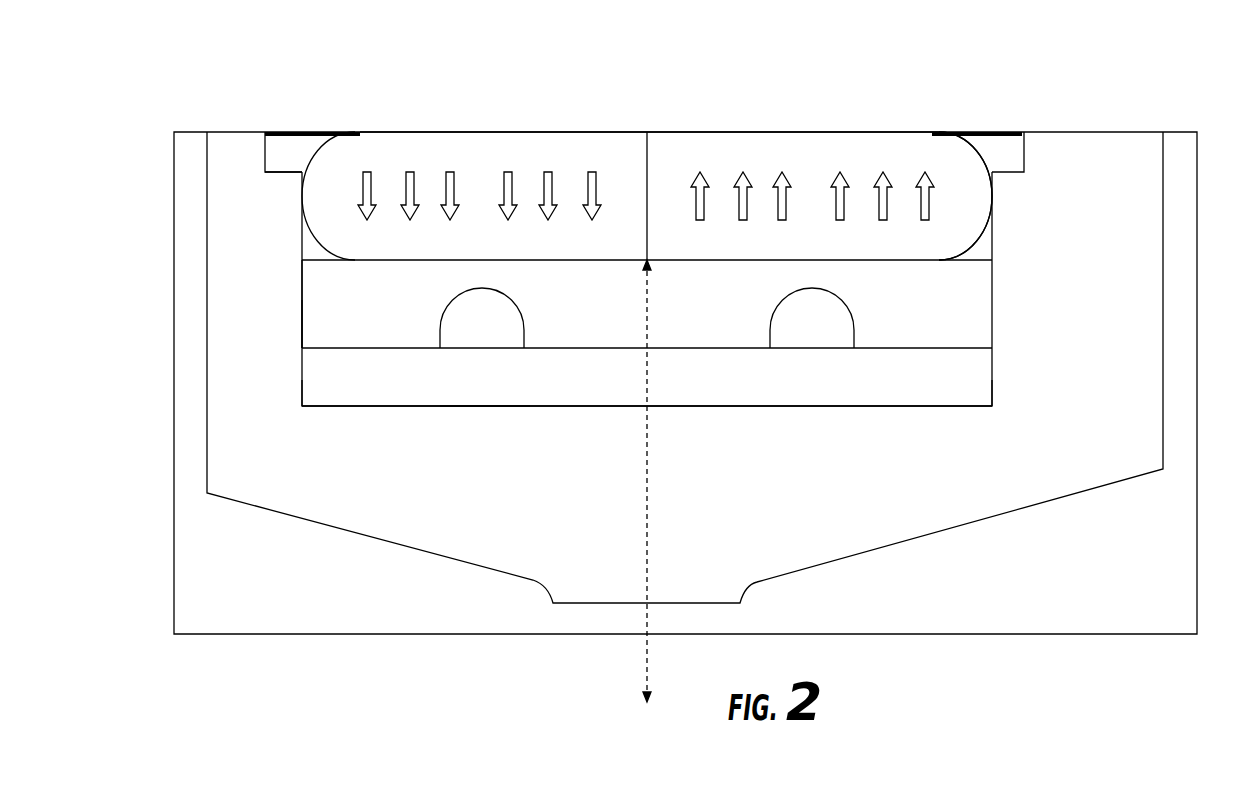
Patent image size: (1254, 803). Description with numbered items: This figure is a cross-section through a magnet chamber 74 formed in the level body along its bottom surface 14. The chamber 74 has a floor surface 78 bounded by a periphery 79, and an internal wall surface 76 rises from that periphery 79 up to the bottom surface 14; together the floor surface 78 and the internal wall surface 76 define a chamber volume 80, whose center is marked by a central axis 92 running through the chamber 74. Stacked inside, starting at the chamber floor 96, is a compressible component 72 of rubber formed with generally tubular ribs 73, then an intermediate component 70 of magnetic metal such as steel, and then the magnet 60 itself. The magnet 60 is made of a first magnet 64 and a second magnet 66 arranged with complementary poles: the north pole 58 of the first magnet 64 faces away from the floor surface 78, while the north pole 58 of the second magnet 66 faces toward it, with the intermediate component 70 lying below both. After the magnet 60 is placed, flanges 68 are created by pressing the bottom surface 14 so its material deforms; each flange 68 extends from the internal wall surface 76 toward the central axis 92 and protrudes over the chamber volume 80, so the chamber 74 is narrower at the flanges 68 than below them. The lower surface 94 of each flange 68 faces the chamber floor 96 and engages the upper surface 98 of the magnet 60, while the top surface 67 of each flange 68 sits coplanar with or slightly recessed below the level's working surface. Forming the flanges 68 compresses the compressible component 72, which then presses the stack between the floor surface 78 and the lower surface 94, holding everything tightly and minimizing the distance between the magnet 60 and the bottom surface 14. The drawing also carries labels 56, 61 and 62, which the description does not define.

The bottom surface 14 is at (232, 130).
The south pole 56 is at (468, 216).
The north pole 58 is at (793, 220).
The magnet 60 is at (936, 132).
The rounded side surface 61 is at (932, 256).
The second magnet 62 is at (705, 127).
The first magnet 64 is at (397, 138).
The second magnet 66 is at (835, 148).
The top surface of flange 67 is at (327, 130).
The flange 68 is at (283, 130).
The intermediate component 70 is at (974, 275).
The compressible component 72 is at (974, 362).
The ribs 73 is at (493, 333).
The chamber 74 is at (298, 300).
The internal wall surface 76 is at (300, 332).
The floor surface 78 is at (485, 410).
The periphery 79 is at (300, 409).
The chamber volume 80 is at (650, 505).
The central axis 92 is at (651, 140).
The lower surface of flange 94 is at (275, 177).
The chamber floor 96 is at (577, 403).
The upper surface of magnet 98 is at (325, 140).